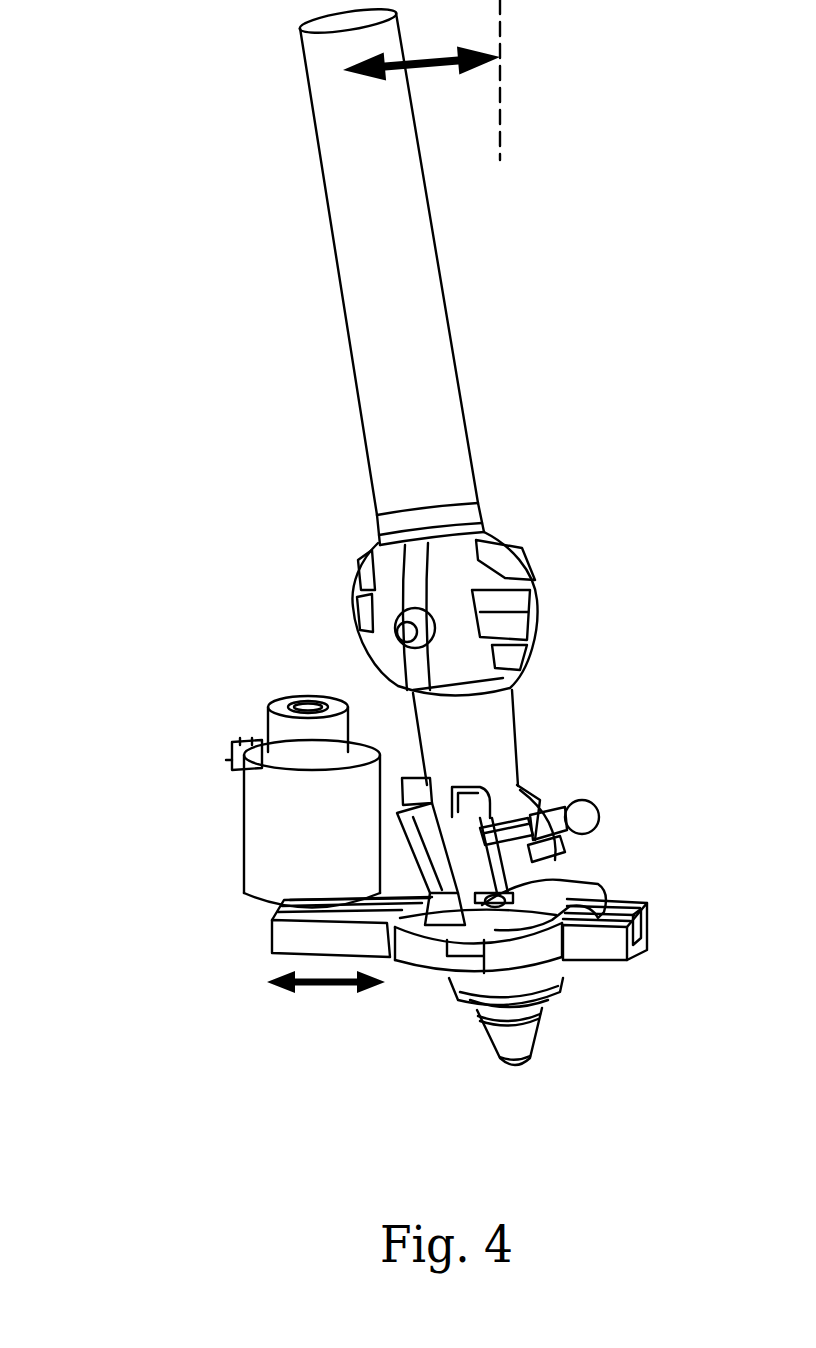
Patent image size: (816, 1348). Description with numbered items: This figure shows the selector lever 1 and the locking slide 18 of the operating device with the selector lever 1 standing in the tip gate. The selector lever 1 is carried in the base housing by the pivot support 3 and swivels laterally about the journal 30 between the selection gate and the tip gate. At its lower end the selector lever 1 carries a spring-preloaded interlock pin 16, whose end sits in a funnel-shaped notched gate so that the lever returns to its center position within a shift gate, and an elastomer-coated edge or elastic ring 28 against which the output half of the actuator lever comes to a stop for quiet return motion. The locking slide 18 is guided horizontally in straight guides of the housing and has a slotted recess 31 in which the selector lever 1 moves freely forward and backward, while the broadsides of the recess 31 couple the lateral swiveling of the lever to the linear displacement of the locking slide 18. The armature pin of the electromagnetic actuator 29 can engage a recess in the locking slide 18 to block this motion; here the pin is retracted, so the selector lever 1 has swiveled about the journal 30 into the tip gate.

The selector lever 1 is at (396, 296).
The pivot support 3 is at (448, 570).
The journal 30 is at (408, 632).
The electromagnetic actuator 29 is at (277, 810).
The locking slide 18 is at (312, 935).
The elastic ring 28 is at (448, 990).
The interlock pin 16 is at (517, 1027).
The slotted recess 31 is at (478, 930).